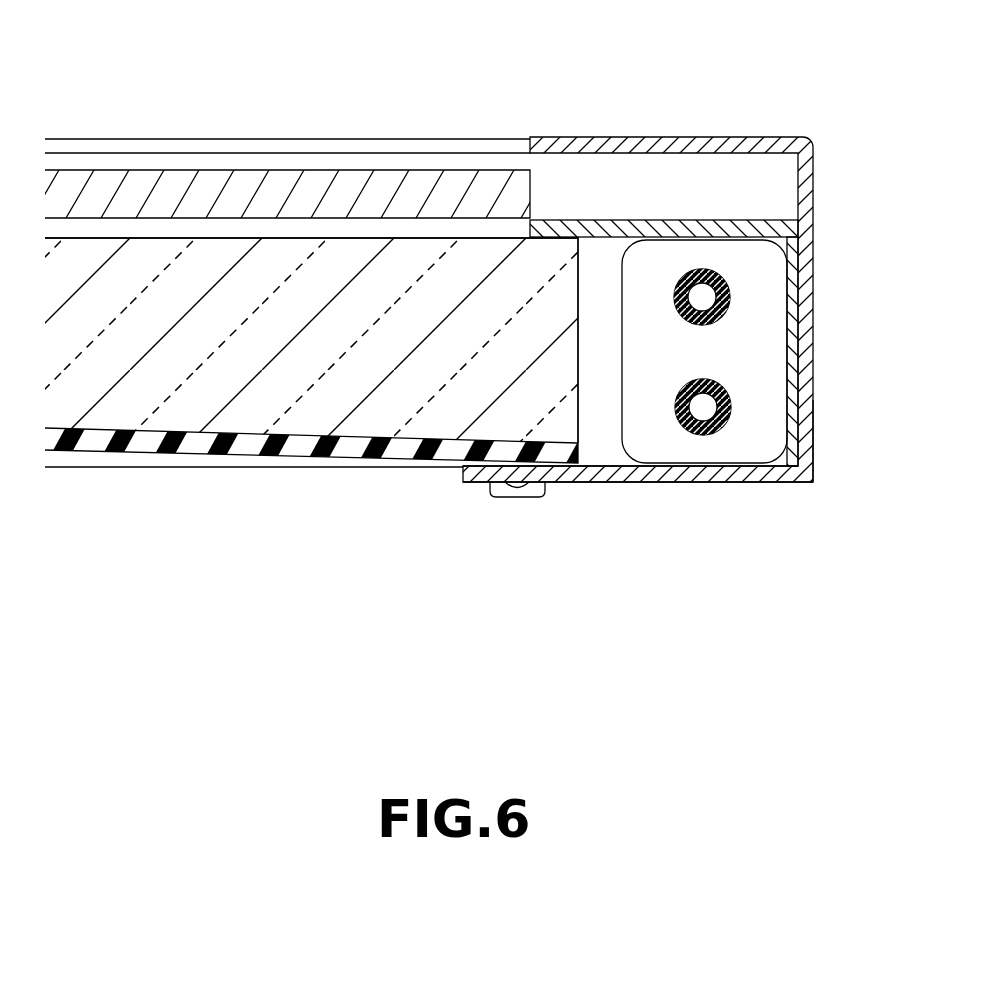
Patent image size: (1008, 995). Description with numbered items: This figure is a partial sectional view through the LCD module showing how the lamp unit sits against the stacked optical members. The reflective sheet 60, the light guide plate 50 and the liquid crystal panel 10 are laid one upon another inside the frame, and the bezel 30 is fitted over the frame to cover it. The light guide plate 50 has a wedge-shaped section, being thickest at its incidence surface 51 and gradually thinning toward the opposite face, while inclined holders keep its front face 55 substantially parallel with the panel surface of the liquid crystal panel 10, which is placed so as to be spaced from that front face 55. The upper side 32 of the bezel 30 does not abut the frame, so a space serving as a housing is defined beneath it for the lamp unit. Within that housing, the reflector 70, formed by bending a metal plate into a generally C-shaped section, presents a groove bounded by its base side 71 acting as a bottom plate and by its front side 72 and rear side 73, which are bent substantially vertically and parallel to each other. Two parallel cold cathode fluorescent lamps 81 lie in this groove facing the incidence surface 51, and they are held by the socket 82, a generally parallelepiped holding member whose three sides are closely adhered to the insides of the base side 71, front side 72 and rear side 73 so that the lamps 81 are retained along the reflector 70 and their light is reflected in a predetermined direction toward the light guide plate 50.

The liquid crystal panel 10 is at (214, 178).
The light guide plate 50 is at (365, 255).
The front face of the light guide plate 55 is at (443, 237).
The incidence surface 51 is at (578, 393).
The reflective sheet 60 is at (236, 458).
The bezel 30 is at (742, 137).
The upper side of the bezel 32 is at (814, 440).
The reflector 70 is at (687, 388).
The base side of the reflector 71 is at (790, 266).
The front side of the reflector 72 is at (717, 220).
The rear side of the reflector 73 is at (765, 482).
The cold cathode fluorescent lamps 81 is at (727, 304).
The socket 82 is at (620, 294).